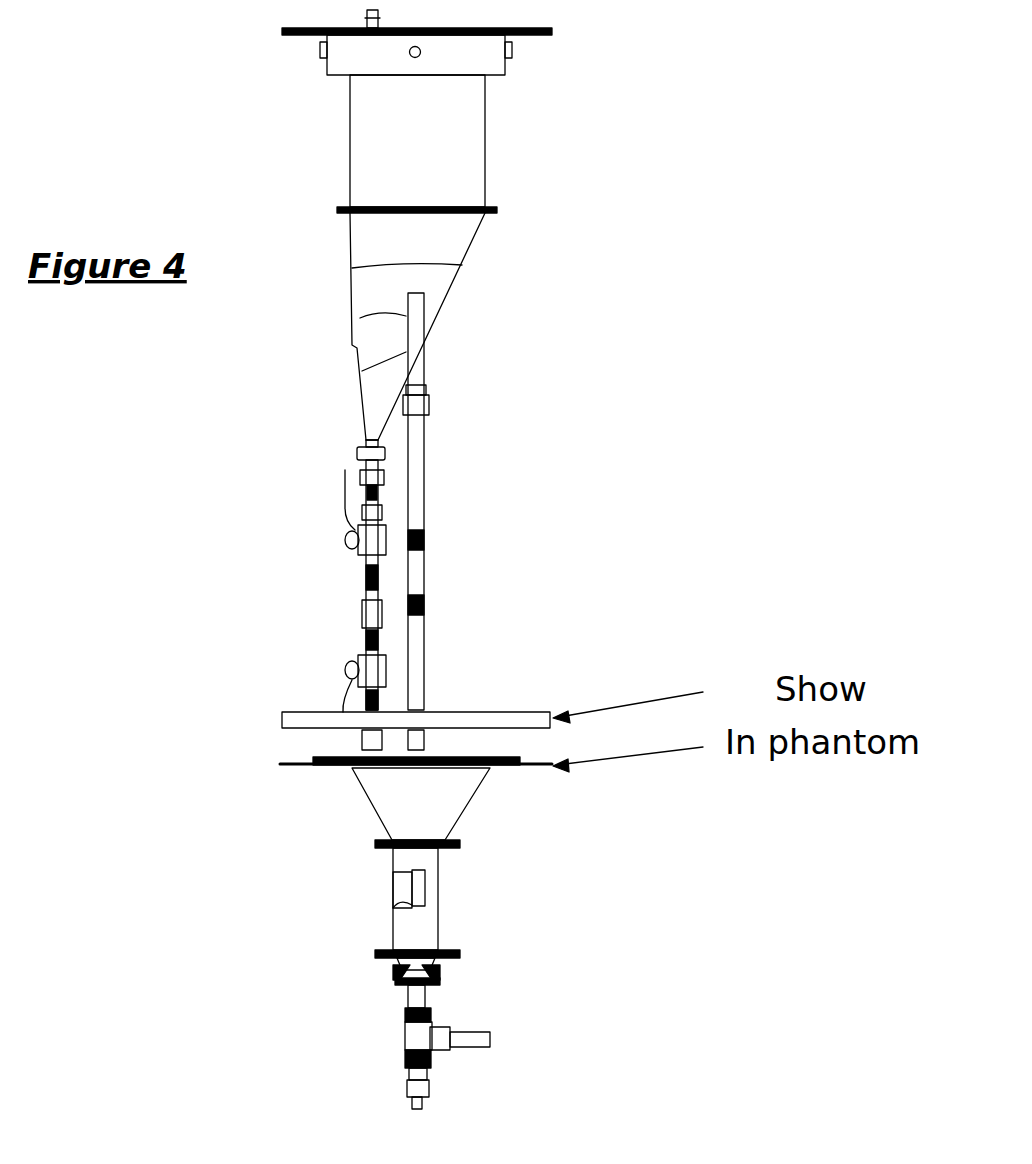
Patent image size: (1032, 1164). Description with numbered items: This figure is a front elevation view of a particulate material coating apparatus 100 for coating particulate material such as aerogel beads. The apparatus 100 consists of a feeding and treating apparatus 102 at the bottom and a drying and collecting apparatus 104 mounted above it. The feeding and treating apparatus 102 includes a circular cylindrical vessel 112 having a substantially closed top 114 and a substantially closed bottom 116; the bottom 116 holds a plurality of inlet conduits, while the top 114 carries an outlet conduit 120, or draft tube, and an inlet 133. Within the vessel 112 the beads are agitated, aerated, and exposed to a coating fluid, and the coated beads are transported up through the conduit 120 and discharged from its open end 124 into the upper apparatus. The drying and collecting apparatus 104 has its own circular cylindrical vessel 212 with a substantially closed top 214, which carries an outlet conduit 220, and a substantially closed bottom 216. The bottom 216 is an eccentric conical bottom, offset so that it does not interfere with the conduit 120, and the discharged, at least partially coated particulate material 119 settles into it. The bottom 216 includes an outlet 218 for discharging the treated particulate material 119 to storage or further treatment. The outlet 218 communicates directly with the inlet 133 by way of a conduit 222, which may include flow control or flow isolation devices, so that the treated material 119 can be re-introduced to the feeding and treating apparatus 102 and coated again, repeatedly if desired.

The particulate material coating apparatus 100 is at (652, 303).
The feeding and treating apparatus 102 is at (552, 862).
The drying and collecting apparatus 104 is at (256, 348).
The vessel 112 is at (368, 817).
The top 114 is at (290, 765).
The bottom 116 is at (390, 967).
The particulate material 119 is at (377, 333).
The outlet conduit 120 is at (428, 348).
The open end 124 is at (432, 299).
The inlet 133 is at (362, 740).
The vessel 212 is at (350, 163).
The top 214 is at (312, 38).
The bottom 216 is at (358, 405).
The outlet 218 is at (356, 446).
The outlet conduit 220 is at (512, 50).
The conduit 222 is at (365, 598).